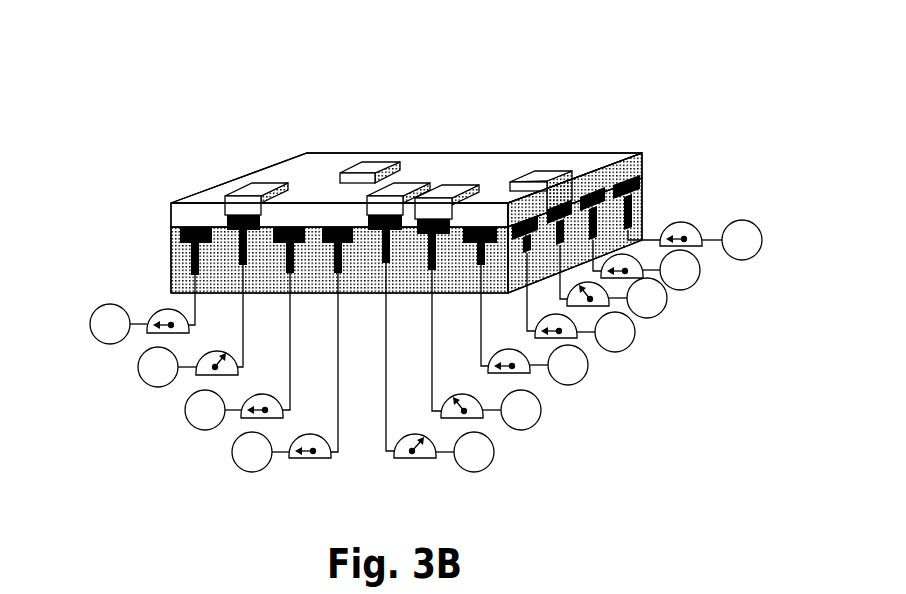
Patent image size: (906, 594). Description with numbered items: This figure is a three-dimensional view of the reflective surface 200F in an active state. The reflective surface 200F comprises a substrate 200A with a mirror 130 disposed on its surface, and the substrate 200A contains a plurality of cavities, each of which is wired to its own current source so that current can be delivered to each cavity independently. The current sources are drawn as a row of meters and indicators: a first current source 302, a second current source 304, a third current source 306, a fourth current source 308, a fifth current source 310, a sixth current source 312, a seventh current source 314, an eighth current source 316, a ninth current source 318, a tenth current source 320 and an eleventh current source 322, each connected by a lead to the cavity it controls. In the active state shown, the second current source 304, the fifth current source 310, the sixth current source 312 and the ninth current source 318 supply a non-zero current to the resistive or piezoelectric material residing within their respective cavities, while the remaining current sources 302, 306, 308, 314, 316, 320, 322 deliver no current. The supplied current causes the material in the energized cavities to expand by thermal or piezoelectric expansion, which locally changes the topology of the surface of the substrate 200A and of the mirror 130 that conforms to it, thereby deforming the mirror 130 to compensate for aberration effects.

The reflective surface 200F is at (128, 52).
The substrate 200A is at (178, 264).
The mirror 130 is at (204, 194).
The first current source 302 is at (80, 321).
The second current source 304 is at (128, 365).
The third current source 306 is at (175, 407).
The fourth current source 308 is at (222, 450).
The fifth current source 310 is at (505, 448).
The sixth current source 312 is at (552, 408).
The seventh current source 314 is at (599, 365).
The eighth current source 316 is at (646, 331).
The ninth current source 318 is at (678, 299).
The tenth current source 320 is at (711, 271).
The eleventh current source 322 is at (773, 239).